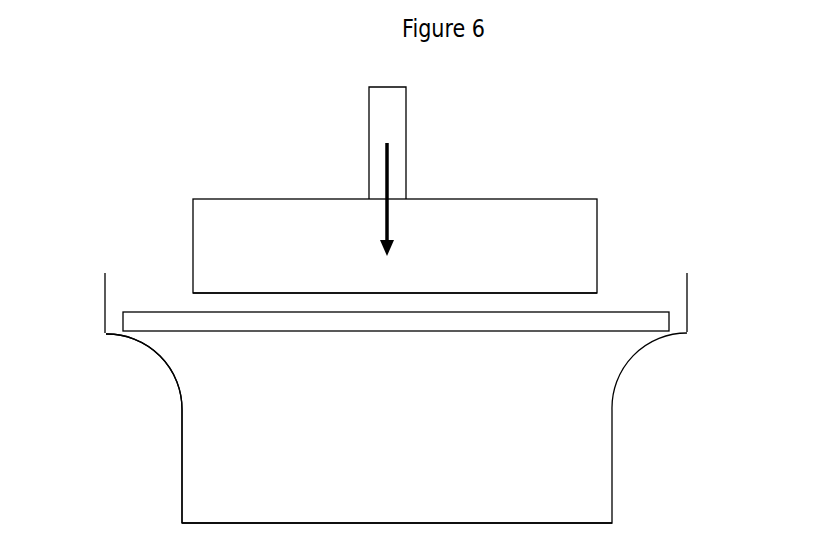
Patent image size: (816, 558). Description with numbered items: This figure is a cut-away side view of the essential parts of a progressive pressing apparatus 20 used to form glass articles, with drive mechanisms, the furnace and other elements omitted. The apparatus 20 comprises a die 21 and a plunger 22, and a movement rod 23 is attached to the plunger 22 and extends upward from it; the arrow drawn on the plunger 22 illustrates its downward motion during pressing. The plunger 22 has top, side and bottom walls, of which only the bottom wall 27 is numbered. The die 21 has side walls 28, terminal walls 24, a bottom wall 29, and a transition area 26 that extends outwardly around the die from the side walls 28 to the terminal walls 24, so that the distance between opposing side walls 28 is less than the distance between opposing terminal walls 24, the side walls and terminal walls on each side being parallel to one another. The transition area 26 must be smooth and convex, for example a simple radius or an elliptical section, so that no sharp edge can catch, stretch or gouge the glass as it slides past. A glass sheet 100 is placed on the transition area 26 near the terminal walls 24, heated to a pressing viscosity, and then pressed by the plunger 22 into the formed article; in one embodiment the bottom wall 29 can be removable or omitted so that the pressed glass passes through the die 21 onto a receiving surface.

The apparatus 20 is at (158, 98).
The die 21 is at (687, 293).
The plunger 22 is at (555, 255).
The movement rod 23 is at (406, 143).
The terminal walls 24 is at (105, 293).
The transition area 26 is at (162, 368).
The bottom wall of the plunger 27 is at (538, 293).
The side walls 28 is at (182, 443).
The bottom wall 29 is at (237, 517).
The glass sheet 100 is at (655, 307).